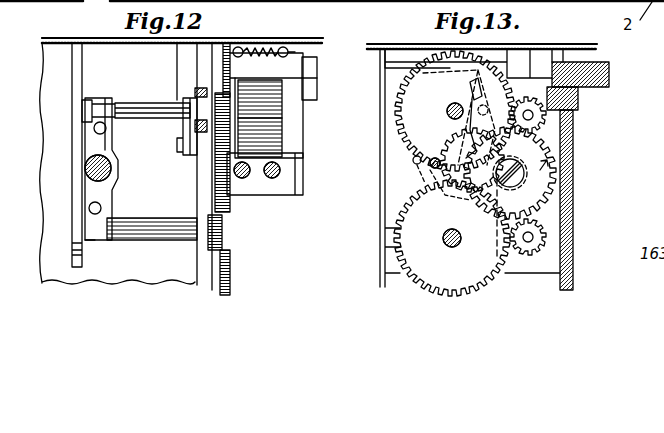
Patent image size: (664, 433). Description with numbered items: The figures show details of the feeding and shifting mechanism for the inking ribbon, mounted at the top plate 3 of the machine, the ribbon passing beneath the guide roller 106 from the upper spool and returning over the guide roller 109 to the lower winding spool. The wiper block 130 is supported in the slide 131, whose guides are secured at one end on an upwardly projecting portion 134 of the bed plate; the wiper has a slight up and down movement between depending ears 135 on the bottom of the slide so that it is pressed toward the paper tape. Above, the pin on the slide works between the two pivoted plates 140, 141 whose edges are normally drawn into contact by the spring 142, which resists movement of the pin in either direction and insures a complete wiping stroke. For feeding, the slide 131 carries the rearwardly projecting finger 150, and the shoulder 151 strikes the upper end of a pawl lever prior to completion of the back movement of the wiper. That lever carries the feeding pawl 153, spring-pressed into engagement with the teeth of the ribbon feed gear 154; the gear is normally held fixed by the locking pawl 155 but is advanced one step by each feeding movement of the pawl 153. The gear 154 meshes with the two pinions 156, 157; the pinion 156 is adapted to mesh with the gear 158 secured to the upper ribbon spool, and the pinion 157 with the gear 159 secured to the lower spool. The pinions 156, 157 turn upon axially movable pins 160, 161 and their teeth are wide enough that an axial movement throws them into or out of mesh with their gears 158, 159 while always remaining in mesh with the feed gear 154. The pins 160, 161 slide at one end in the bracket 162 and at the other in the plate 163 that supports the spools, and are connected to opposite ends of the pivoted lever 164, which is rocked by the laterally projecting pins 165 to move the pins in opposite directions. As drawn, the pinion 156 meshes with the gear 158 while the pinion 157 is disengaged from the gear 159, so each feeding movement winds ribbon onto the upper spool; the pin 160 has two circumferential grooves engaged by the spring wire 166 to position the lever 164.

In FIG. 12, the top plate 3 is at (223, 45).
In FIG. 13, the top plate 3 is at (530, 48).
In FIG. 12, the guide roller 106 is at (273, 88).
In FIG. 12, the guide roller 109 is at (277, 132).
In FIG. 12, the wiper block 130 is at (313, 92).
In FIG. 13, the wiper block 130 is at (577, 110).
In FIG. 12, the slide 131 is at (312, 68).
In FIG. 13, the slide 131 is at (603, 63).
In FIG. 12, the upwardly projecting portion 134 is at (293, 118).
In FIG. 13, the depending ears 135 is at (595, 102).
In FIG. 12, the plate 140 is at (297, 43).
In FIG. 12, the plate 141 is at (247, 45).
In FIG. 12, the spring 142 is at (267, 47).
In FIG. 13, the finger 150 is at (397, 62).
In FIG. 13, the shoulder 151 is at (477, 78).
In FIG. 13, the feeding pawl 153 is at (462, 137).
In FIG. 12, the ribbon feed gear 154 is at (217, 170).
In FIG. 13, the ribbon feed gear 154 is at (543, 173).
In FIG. 13, the locking pawl 155 is at (438, 175).
In FIG. 12, the pinion 156 is at (213, 97).
In FIG. 13, the pinion 156 is at (545, 117).
In FIG. 12, the pinion 157 is at (223, 228).
In FIG. 13, the pinion 157 is at (543, 228).
In FIG. 12, the gear 158 is at (230, 70).
In FIG. 13, the gear 158 is at (410, 105).
In FIG. 12, the gear 159 is at (230, 203).
In FIG. 13, the gear 159 is at (407, 243).
In FIG. 12, the pin 160 is at (130, 102).
In FIG. 13, the pin 160 is at (537, 117).
In FIG. 12, the pin 161 is at (155, 232).
In FIG. 13, the pin 161 is at (542, 245).
In FIG. 12, the bracket 162 is at (75, 77).
In FIG. 12, the plate 163 is at (205, 72).
In FIG. 13, the plate 163 is at (395, 125).
In FIG. 12, the pivoted lever 164 is at (100, 147).
In FIG. 12, the pins 165 is at (93, 130).
In FIG. 12, the spring wire 166 is at (198, 122).